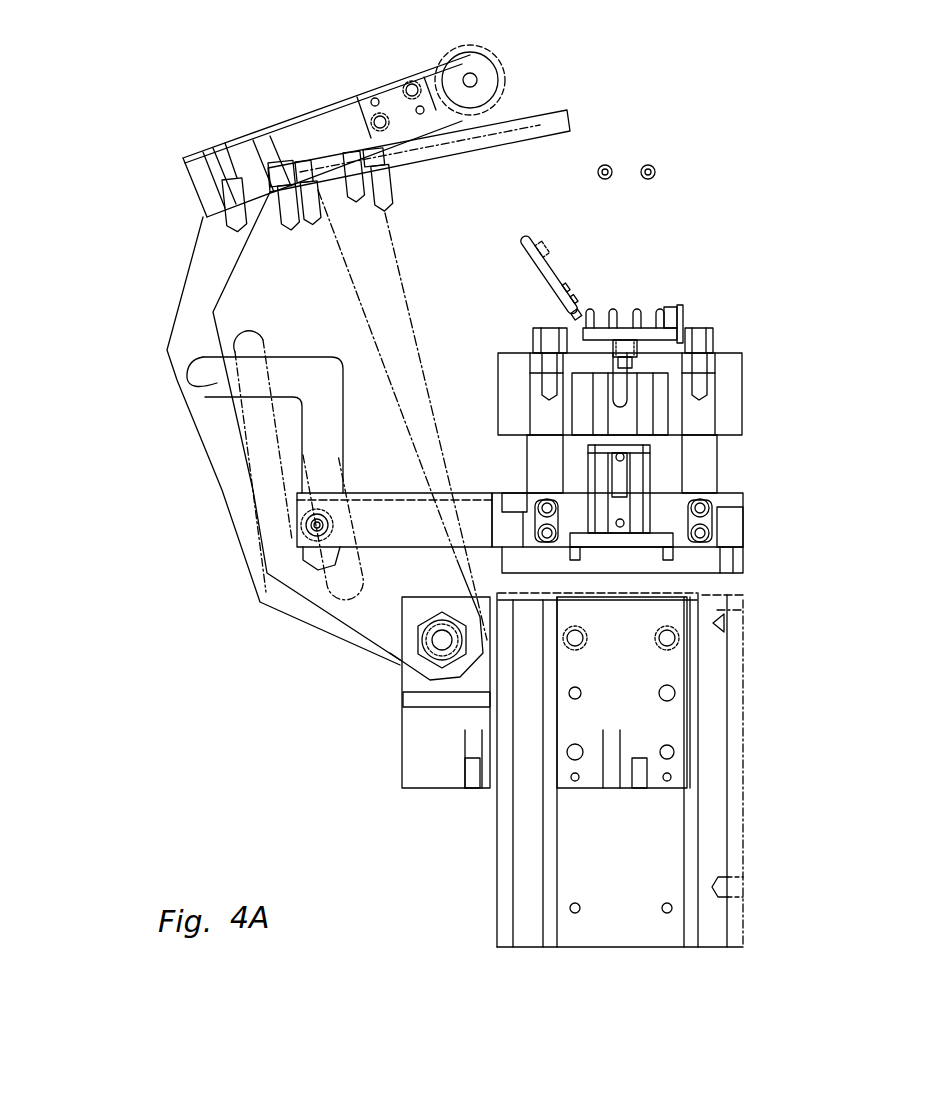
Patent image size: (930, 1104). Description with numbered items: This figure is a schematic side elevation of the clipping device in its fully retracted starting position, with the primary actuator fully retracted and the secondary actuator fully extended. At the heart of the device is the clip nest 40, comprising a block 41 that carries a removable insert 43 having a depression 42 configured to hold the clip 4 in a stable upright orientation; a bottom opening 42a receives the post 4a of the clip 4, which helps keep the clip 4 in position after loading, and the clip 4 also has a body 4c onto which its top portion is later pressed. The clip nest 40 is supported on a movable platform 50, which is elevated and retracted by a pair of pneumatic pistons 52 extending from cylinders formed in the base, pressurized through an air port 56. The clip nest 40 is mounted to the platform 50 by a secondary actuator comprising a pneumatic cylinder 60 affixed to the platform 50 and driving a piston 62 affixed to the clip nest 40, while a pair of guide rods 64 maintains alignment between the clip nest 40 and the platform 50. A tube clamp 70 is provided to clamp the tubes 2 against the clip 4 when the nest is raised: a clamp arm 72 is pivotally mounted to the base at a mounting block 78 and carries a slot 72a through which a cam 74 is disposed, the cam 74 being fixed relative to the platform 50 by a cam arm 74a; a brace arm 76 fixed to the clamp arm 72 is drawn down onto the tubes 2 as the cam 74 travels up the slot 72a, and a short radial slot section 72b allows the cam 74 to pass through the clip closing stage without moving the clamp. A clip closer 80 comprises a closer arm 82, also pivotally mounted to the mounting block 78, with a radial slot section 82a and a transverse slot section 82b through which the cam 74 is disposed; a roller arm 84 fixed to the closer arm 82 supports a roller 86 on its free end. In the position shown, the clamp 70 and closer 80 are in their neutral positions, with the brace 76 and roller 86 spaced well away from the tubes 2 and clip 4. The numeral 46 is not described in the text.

The tubes 2 is at (605, 166).
The clip 4 is at (690, 286).
The post 4a is at (633, 350).
The body 4c is at (633, 310).
The clip nest 40 is at (725, 395).
The block 41 is at (500, 412).
The depression 42 is at (640, 327).
The bottom opening 42a is at (580, 335).
The removable insert 43 is at (570, 333).
The guide 46 is at (547, 267).
The movable platform 50 is at (730, 533).
The pneumatic pistons 52 is at (547, 585).
The air port 56 is at (738, 883).
The pneumatic cylinder 60 is at (650, 475).
The piston 62 is at (618, 418).
The guide rods 64 is at (707, 480).
The tube clamp 70 is at (410, 213).
The clamp arm 72 is at (380, 293).
The slot 72a is at (293, 480).
The radial slot section 72b is at (262, 347).
The cam 74 is at (315, 530).
The cam arm 74a is at (393, 530).
The brace arm 76 is at (540, 113).
The mounting block 78 is at (423, 740).
The clip closer 80 is at (182, 240).
The closer arm 82 is at (216, 428).
The radial slot section 82a is at (323, 467).
The transverse slot section 82b is at (221, 383).
The roller arm 84 is at (330, 122).
The roller 86 is at (490, 60).